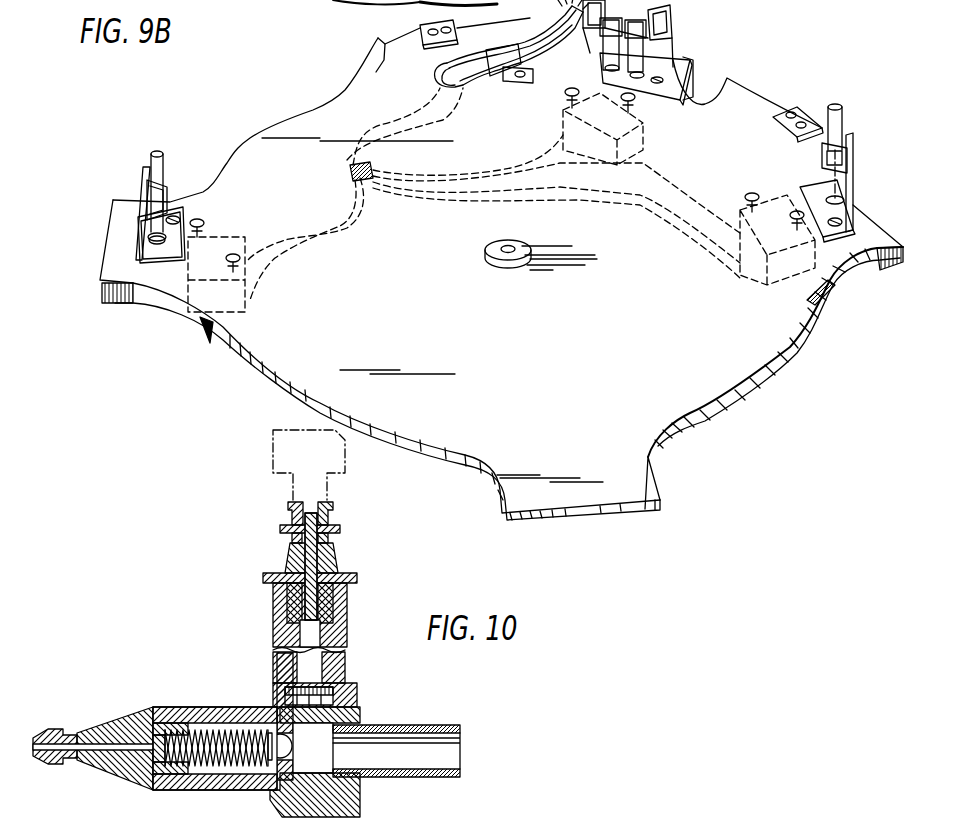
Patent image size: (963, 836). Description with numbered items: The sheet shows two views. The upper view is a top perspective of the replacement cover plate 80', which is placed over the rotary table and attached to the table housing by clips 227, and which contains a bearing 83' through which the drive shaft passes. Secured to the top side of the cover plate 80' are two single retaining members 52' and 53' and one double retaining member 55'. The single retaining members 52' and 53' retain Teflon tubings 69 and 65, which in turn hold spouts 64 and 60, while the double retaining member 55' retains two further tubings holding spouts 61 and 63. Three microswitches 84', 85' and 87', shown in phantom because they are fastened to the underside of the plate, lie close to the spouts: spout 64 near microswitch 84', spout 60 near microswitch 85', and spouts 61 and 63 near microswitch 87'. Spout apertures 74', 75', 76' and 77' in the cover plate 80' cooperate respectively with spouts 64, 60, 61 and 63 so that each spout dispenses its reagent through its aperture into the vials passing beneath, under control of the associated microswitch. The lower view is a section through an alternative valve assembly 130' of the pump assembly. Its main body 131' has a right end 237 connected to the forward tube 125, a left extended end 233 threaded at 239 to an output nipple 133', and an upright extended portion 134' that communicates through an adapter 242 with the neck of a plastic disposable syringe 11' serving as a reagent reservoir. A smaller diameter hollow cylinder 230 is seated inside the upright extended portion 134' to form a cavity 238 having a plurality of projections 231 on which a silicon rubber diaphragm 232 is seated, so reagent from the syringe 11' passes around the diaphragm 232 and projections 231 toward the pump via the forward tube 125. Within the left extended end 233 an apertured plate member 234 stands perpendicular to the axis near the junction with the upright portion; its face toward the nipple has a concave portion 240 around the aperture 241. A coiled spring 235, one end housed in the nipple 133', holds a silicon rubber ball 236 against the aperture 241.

In FIG. 9B, the cover plate 80' is at (501, 269).
In FIG. 9B, the single retaining member 53' is at (128, 200).
In FIG. 9B, the Teflon tubing 65 is at (165, 158).
In FIG. 9B, the spout 60 is at (140, 238).
In FIG. 9B, the spout aperture 75' is at (112, 247).
In FIG. 9B, the microswitch 85' is at (235, 253).
In FIG. 9B, the clips 227 is at (425, 48).
In FIG. 9B, the spout 61 is at (600, 61).
In FIG. 9B, the spout aperture 76' is at (568, 92).
In FIG. 9B, the double retaining member 55' is at (671, 33).
In FIG. 9B, the spout 63 is at (672, 57).
In FIG. 9B, the spout aperture 77' is at (664, 108).
In FIG. 9B, the microswitch 87' is at (624, 134).
In FIG. 9B, the Teflon tubing 69 is at (843, 114).
In FIG. 9B, the single retaining member 52' is at (860, 179).
In FIG. 9B, the spout 64 is at (815, 185).
In FIG. 9B, the spout aperture 74' is at (855, 208).
In FIG. 9B, the bearing 83' is at (541, 245).
In FIG. 9B, the microswitch 84' is at (838, 300).
In FIG. 10, the disposable syringe 11' is at (280, 465).
In FIG. 10, the adapter 242 is at (283, 529).
In FIG. 10, the valve assembly 130' is at (355, 659).
In FIG. 10, the upright extended portion 134' is at (267, 576).
In FIG. 10, the smaller diameter hollow cylinder 230 is at (290, 623).
In FIG. 10, the cavity 238 is at (277, 687).
In FIG. 10, the ball 236 is at (280, 734).
In FIG. 10, the main body 131' is at (173, 714).
In FIG. 10, the left extended end 233 is at (182, 722).
In FIG. 10, the output nipple 133' is at (53, 717).
In FIG. 10, the threads 239 is at (143, 780).
In FIG. 10, the coiled spring 235 is at (213, 767).
In FIG. 10, the concave portion 240 is at (272, 760).
In FIG. 10, the diaphragm 232 is at (347, 683).
In FIG. 10, the projections 231 is at (347, 697).
In FIG. 10, the aperture 241 is at (360, 713).
In FIG. 10, the forward tube 125 is at (450, 727).
In FIG. 10, the apertured plate member 234 is at (297, 766).
In FIG. 10, the right end 237 is at (362, 790).